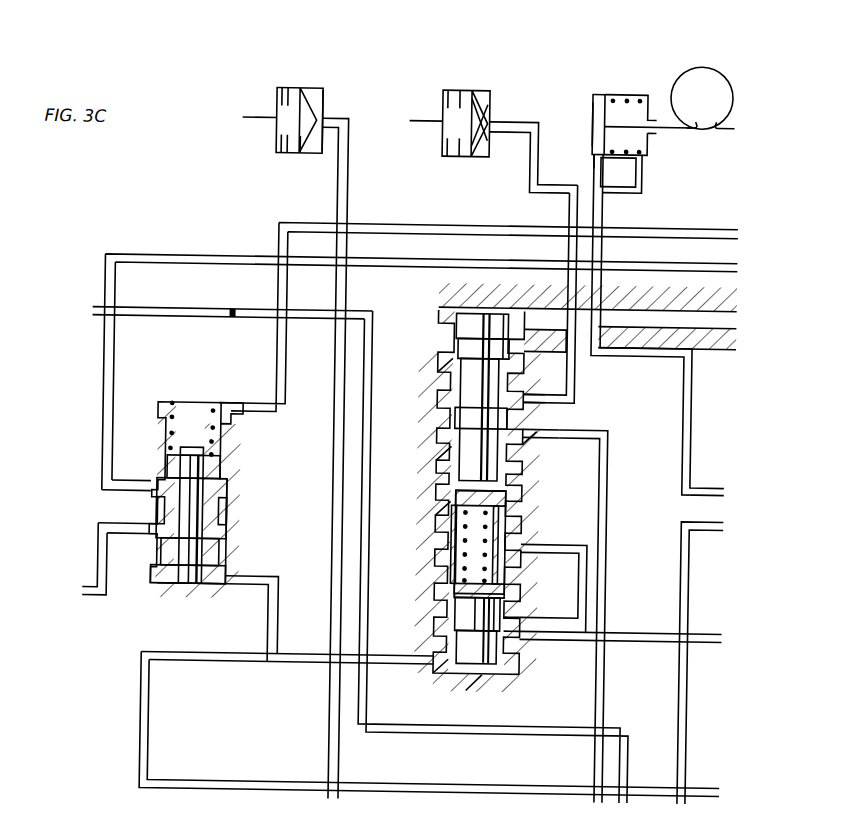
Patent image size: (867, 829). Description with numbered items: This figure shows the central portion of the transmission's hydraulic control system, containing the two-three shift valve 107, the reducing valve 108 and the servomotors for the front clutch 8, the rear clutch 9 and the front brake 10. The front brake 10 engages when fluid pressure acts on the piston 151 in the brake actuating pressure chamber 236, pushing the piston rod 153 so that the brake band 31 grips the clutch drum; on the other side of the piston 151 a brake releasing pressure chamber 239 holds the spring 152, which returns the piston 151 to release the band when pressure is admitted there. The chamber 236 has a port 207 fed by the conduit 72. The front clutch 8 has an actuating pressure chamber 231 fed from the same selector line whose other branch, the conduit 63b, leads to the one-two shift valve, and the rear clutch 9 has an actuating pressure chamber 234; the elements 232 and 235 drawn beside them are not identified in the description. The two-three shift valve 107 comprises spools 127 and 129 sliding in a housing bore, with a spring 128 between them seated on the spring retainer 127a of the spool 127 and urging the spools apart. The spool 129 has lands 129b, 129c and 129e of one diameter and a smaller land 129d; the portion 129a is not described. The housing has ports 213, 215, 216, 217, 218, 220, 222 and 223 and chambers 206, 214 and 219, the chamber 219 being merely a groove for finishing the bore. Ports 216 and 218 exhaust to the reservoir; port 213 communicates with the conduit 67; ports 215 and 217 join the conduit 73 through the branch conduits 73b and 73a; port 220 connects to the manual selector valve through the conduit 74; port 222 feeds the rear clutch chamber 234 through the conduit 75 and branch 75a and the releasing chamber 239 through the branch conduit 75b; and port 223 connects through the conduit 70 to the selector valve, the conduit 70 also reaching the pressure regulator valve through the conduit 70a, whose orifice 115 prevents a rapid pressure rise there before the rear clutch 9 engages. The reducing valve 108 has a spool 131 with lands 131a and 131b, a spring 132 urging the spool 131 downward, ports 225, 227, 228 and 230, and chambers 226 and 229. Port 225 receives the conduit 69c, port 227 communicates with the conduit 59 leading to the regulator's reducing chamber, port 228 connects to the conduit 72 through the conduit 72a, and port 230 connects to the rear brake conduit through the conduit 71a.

The front clutch 8 is at (290, 90).
The actuating pressure chamber 231 is at (318, 103).
The valve member 232 is at (300, 140).
The rear clutch 9 is at (466, 90).
The actuating pressure chamber 234 is at (484, 94).
The valve member 235 is at (472, 122).
The front brake 10 is at (689, 62).
The brake band 31 is at (724, 78).
The piston 151 is at (592, 92).
The spring 152 is at (628, 94).
The piston rod 153 is at (662, 130).
The brake actuating pressure chamber 236 is at (588, 112).
The port 207 is at (592, 160).
The brake releasing pressure chamber 239 is at (642, 152).
The branch conduit 75a is at (530, 165).
The conduit 75 is at (566, 203).
The branch conduit 75b is at (626, 190).
The conduit 72 is at (708, 484).
The conduit 72a is at (155, 258).
The conduit 71a is at (680, 236).
The conduit 70a is at (304, 310).
The conduit 70 is at (362, 466).
The orifice 115 is at (231, 310).
The chamber 206 is at (634, 320).
The 2-3 shift valve 107 is at (472, 285).
The land 129e is at (455, 318).
The land 129d is at (457, 348).
The spool 129 is at (478, 402).
The land 129c is at (523, 430).
The land 129b is at (512, 488).
The piston skirt 129a is at (510, 518).
The port 223 is at (437, 374).
The port 222 is at (530, 392).
The chamber 219 is at (437, 457).
The port 220 is at (523, 450).
The exhaust port 218 is at (437, 504).
The spring 128 is at (455, 544).
The port 217 is at (525, 552).
The port 215 is at (523, 592).
The exhaust port 216 is at (438, 594).
The spring retainer 127a is at (438, 622).
The spool 127 is at (486, 652).
The port 213 is at (437, 670).
The chamber 214 is at (476, 676).
The branch conduit 73a is at (584, 540).
The branch conduit 73b is at (553, 640).
The conduit 73 is at (641, 640).
The conduit 74 is at (606, 573).
The conduit 63b is at (712, 528).
The reducing valve 108 is at (139, 398).
The chamber 229 is at (180, 414).
The spring 132 is at (213, 410).
The port 230 is at (240, 400).
The land 131b is at (222, 464).
The spool 131 is at (216, 500).
The land 131a is at (222, 553).
The port 228 is at (152, 500).
The port 227 is at (160, 542).
The conduit 59 is at (98, 606).
The chamber 226 is at (175, 582).
The port 225 is at (228, 588).
The conduit 69c is at (280, 612).
The conduit 67 is at (203, 666).